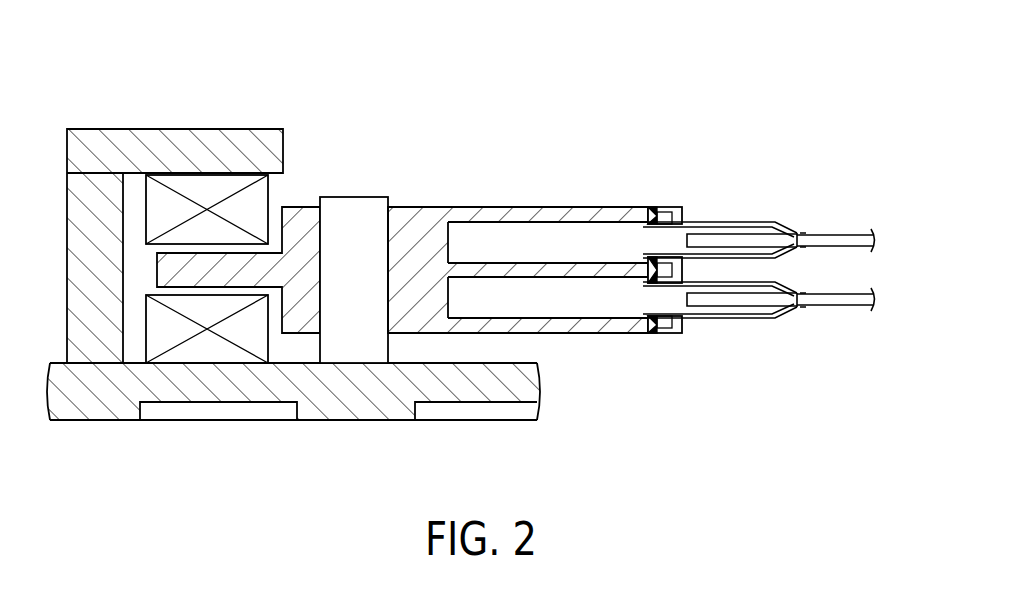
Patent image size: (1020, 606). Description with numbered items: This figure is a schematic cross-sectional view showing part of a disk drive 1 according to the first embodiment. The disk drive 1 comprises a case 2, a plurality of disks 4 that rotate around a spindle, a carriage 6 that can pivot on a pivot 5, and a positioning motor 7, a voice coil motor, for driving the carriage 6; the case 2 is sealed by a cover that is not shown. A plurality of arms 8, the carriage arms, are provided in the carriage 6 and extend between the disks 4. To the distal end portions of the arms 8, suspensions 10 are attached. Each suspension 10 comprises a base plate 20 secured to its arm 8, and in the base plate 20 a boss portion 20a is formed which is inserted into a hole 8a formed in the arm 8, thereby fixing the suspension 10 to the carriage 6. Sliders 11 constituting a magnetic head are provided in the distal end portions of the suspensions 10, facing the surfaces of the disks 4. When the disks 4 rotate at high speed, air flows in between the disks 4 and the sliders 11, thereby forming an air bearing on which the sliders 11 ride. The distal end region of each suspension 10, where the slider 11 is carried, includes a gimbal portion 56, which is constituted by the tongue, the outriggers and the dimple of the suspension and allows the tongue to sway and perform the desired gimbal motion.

The disk drive 1 is at (225, 83).
The case 2 is at (108, 422).
The disk 4 is at (860, 233).
The pivot 5 is at (353, 208).
The carriage 6 is at (501, 207).
The positioning motor 7 is at (205, 352).
The arm 8 is at (593, 206).
The hole 8a is at (661, 207).
The suspension 10 is at (766, 222).
The slider 11 is at (812, 232).
The base plate 20 is at (688, 222).
The boss portion 20a is at (654, 207).
The gimbal portion 56 is at (785, 222).